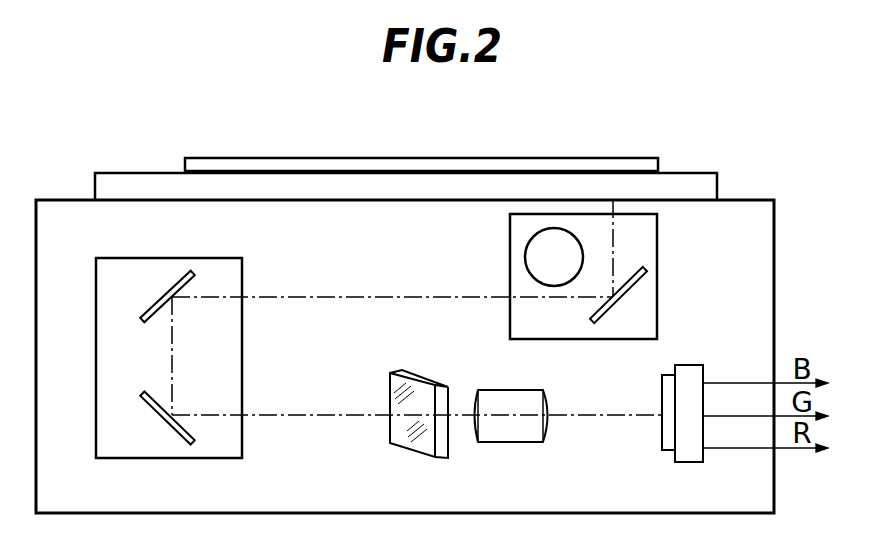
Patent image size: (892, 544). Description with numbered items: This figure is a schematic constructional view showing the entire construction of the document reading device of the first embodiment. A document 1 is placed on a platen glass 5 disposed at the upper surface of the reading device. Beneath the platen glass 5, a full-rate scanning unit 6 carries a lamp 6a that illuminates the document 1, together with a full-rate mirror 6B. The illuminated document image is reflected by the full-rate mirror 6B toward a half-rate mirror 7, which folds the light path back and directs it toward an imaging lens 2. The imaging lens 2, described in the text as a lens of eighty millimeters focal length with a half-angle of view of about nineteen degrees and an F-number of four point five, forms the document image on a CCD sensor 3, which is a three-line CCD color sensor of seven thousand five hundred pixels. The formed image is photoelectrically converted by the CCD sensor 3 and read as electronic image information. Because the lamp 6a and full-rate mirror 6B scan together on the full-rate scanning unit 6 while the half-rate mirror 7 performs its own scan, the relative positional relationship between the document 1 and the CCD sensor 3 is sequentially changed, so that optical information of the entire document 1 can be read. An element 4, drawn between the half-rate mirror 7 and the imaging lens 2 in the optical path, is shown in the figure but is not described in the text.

The document 1 is at (533, 158).
The platen glass 5 is at (688, 173).
The full-rate scanning unit 6 is at (657, 236).
The lamp 6a is at (525, 258).
The full-rate mirror 6B is at (630, 295).
The half-rate mirror 7 is at (151, 320).
The polarization conversion element 4 is at (398, 446).
The imaging lens 2 is at (510, 443).
The CCD sensor 3 is at (672, 455).